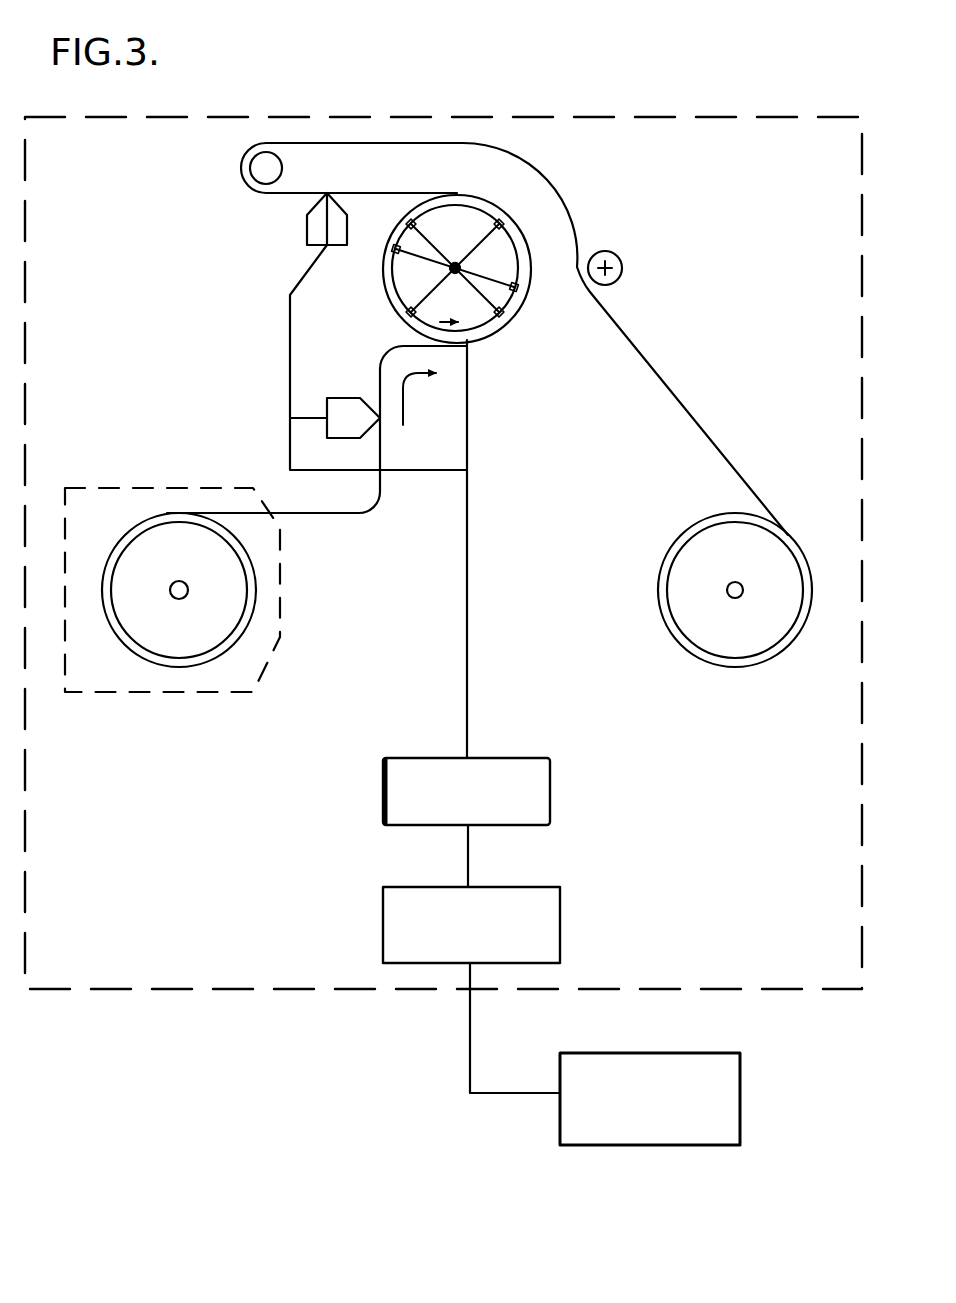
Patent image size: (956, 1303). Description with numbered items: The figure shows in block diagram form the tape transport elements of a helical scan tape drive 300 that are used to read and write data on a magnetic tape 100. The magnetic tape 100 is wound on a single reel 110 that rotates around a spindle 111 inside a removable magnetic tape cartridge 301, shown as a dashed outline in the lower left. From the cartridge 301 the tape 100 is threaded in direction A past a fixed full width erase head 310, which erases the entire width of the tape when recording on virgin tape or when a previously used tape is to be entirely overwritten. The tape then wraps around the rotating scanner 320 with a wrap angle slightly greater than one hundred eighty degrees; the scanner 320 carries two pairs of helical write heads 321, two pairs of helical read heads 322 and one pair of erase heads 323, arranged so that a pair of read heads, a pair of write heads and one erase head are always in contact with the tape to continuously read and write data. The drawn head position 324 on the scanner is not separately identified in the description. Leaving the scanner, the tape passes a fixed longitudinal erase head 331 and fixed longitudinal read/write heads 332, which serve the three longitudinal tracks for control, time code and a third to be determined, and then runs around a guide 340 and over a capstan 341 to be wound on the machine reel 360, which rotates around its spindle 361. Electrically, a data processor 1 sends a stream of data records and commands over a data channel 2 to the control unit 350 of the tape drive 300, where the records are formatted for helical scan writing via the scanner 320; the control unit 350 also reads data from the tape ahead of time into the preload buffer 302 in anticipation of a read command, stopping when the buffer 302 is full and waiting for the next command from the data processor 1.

The data processor 1 is at (645, 1053).
The data channel 2 is at (471, 1028).
The magnetic tape 100 is at (318, 513).
The reel 110 is at (215, 608).
The spindle 111 is at (177, 580).
The helical scan tape drive 300 is at (283, 989).
The magnetic tape cartridge 301 is at (283, 637).
The preload buffer 302 is at (551, 790).
The full width erase head 310 is at (347, 438).
The scanner 320 is at (415, 330).
The helical write heads 321 is at (499, 313).
The helical read heads 322 is at (499, 224).
The erase heads 323 is at (514, 290).
The read head 324 is at (410, 311).
The longitudinal erase head 331 is at (341, 245).
The longitudinal read/write head 332 is at (307, 231).
The guide 340 is at (247, 162).
The capstan 341 is at (615, 283).
The control unit 350 is at (561, 926).
The machine reel 360 is at (689, 625).
The spindle 361 is at (730, 581).